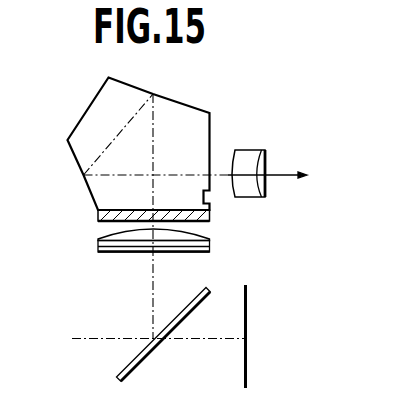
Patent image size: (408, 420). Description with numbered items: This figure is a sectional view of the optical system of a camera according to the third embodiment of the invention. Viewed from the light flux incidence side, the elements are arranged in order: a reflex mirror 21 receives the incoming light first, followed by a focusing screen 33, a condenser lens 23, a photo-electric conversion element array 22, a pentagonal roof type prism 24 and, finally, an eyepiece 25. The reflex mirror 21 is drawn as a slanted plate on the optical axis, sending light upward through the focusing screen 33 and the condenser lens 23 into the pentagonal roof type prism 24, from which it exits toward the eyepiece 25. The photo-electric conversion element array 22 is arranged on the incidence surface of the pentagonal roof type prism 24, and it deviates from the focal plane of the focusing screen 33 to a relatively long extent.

The reflex mirror 21 is at (137, 362).
The photo-electric conversion element array 22 is at (98, 215).
The condenser lens 23 is at (98, 240).
The pentagonal roof type prism 24 is at (177, 110).
The eyepiece 25 is at (245, 151).
The focusing screen 33 is at (107, 252).